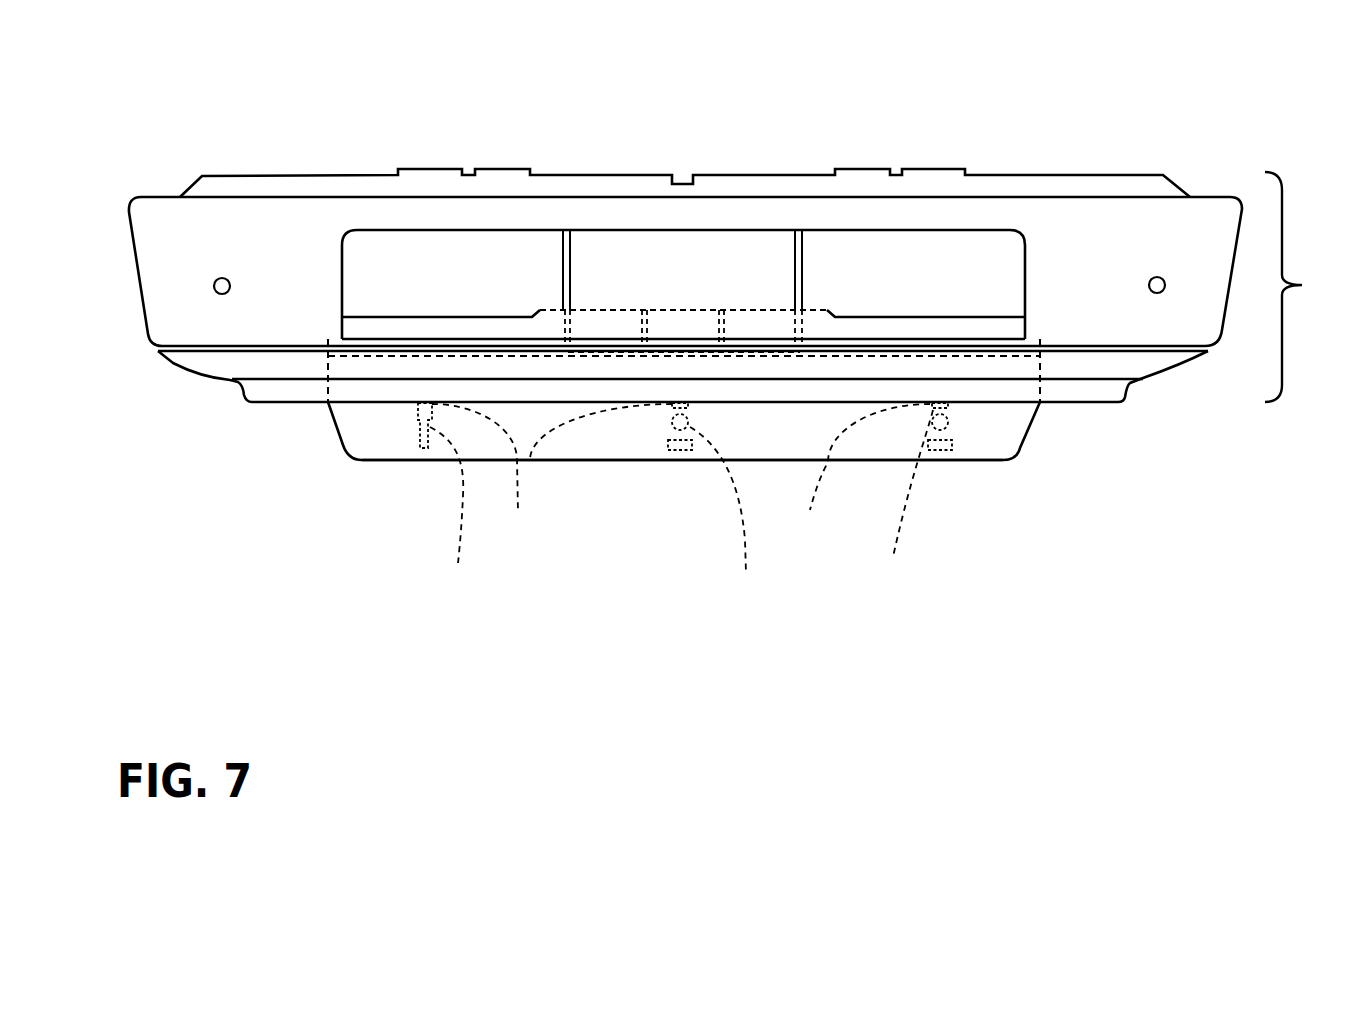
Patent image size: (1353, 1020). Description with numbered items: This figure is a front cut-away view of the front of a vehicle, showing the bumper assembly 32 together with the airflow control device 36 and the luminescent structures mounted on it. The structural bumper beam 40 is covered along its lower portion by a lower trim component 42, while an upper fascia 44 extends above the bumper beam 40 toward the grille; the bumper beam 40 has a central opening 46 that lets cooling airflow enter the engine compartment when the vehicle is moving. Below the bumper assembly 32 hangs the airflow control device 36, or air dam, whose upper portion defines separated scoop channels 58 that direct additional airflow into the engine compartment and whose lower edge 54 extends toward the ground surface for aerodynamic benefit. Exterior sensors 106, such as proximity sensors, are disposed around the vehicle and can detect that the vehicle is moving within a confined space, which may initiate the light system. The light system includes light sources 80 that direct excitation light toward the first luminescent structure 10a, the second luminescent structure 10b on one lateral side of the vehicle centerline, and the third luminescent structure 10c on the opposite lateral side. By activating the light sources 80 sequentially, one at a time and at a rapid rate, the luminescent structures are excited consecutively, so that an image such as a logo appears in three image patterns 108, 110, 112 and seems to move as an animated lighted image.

The bumper assembly 32 is at (1300, 287).
The airflow control device 36 is at (955, 462).
The bumper beam 40 is at (172, 314).
The lower trim component 42 is at (212, 362).
The upper fascia 44 is at (250, 185).
The central opening 46 is at (703, 270).
The lower edge 54 is at (447, 462).
The scoop channels 58 is at (589, 336).
The light sources 80 is at (681, 473).
The exterior sensor 106 is at (213, 287).
The first image pattern 108 is at (449, 512).
The second image pattern 110 is at (722, 516).
The third image pattern 112 is at (904, 501).
The first luminescent structure 10a is at (670, 440).
The second luminescent structure 10b is at (418, 440).
The third luminescent structure 10c is at (948, 433).